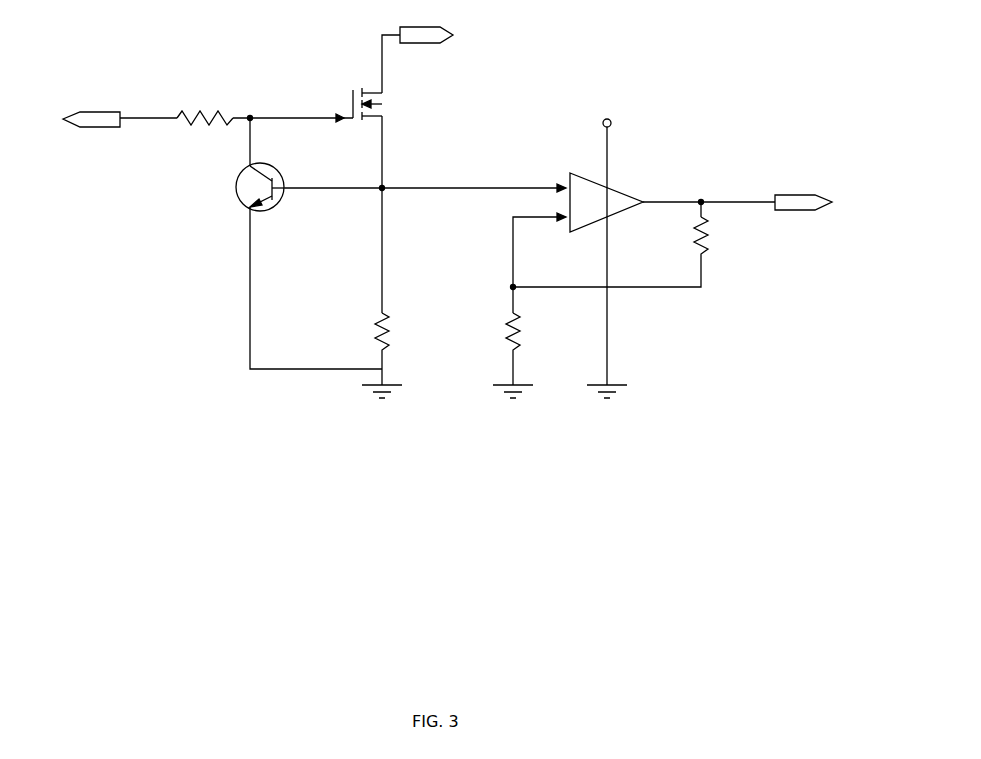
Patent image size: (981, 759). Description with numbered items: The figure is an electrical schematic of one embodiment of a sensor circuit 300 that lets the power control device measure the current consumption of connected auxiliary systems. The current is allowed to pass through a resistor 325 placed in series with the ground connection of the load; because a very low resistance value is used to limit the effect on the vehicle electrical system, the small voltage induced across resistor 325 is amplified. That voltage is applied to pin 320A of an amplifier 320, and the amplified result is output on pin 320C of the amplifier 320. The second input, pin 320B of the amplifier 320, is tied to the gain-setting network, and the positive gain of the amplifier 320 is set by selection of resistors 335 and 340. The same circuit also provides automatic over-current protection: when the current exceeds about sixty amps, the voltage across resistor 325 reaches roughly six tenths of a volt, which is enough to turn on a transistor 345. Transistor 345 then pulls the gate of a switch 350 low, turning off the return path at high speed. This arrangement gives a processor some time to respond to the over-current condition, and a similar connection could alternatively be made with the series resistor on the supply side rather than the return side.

The sensor circuit 300 is at (433, 467).
The switch 350 is at (353, 90).
The transistor 345 is at (250, 205).
The amplifier 320 is at (603, 197).
The pin of amplifier 320A is at (425, 180).
The pin of amplifier 320B is at (539, 256).
The pin of amplifier 320C is at (709, 191).
The resistor 325 is at (385, 328).
The resistor 340 is at (517, 355).
The resistor 335 is at (705, 240).